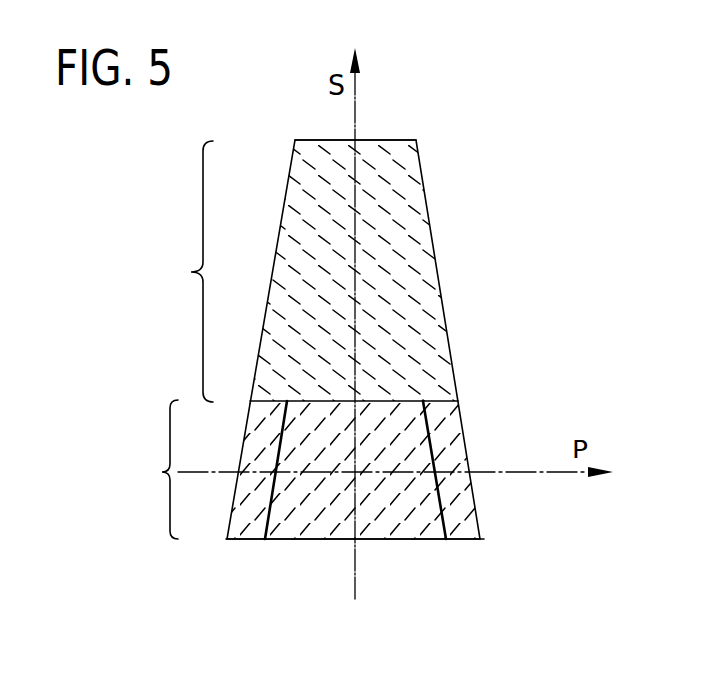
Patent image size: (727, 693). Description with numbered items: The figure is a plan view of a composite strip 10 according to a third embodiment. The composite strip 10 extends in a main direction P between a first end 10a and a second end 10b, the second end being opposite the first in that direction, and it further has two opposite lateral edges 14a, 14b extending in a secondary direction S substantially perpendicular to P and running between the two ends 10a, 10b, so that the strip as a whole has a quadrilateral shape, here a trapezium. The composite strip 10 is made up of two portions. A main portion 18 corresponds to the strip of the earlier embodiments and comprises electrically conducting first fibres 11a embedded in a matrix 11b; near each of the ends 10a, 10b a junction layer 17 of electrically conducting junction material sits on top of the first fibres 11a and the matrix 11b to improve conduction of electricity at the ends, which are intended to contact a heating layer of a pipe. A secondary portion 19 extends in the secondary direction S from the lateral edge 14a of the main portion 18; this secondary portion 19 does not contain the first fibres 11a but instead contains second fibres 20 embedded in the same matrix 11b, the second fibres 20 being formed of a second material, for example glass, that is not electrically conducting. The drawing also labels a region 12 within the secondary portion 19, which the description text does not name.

The composite strip 10 is at (558, 177).
The first end 10a is at (242, 245).
The second end 10b is at (516, 411).
The first fibres 11a is at (324, 510).
The matrix 11b is at (397, 515).
The upper section 12 is at (427, 265).
The lateral edge 14a is at (413, 538).
The lateral edge 14b is at (402, 401).
The junction layer 17 is at (252, 523).
The main portion 18 is at (153, 469).
The secondary portion 19 is at (183, 271).
The second fibres 20 is at (400, 165).